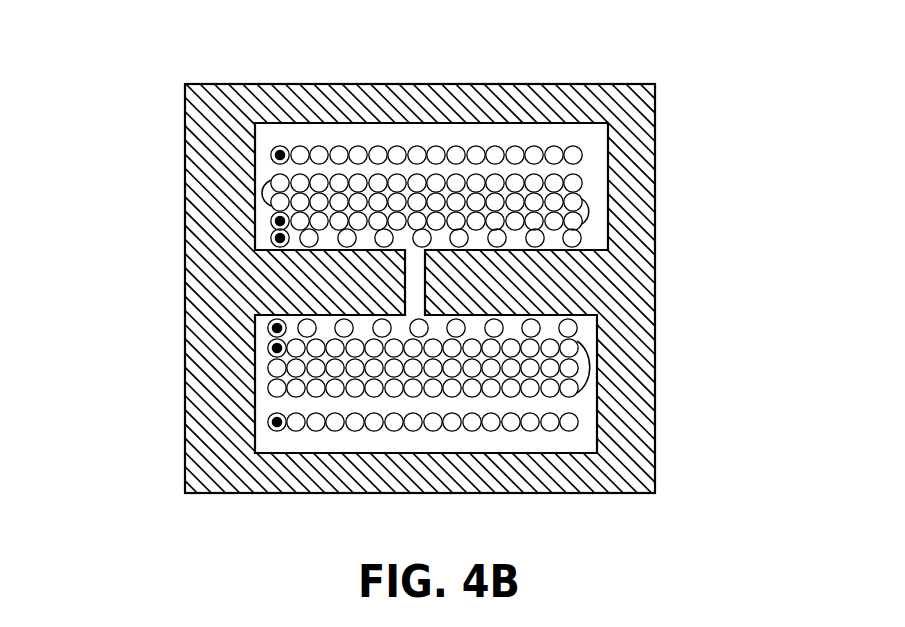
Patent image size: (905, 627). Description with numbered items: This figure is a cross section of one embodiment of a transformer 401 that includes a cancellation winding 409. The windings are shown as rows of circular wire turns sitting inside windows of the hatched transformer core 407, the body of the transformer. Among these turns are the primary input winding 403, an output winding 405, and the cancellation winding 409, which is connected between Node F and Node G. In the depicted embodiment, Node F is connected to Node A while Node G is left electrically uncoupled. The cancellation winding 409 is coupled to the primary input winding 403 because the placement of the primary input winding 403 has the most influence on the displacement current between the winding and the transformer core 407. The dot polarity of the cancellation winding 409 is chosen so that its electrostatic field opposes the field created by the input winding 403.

The transformer 401 is at (673, 34).
The primary input winding 403 is at (837, 357).
The output winding 405 is at (760, 142).
The transformer core 407 is at (235, 328).
The cancellation winding 409 is at (827, 263).